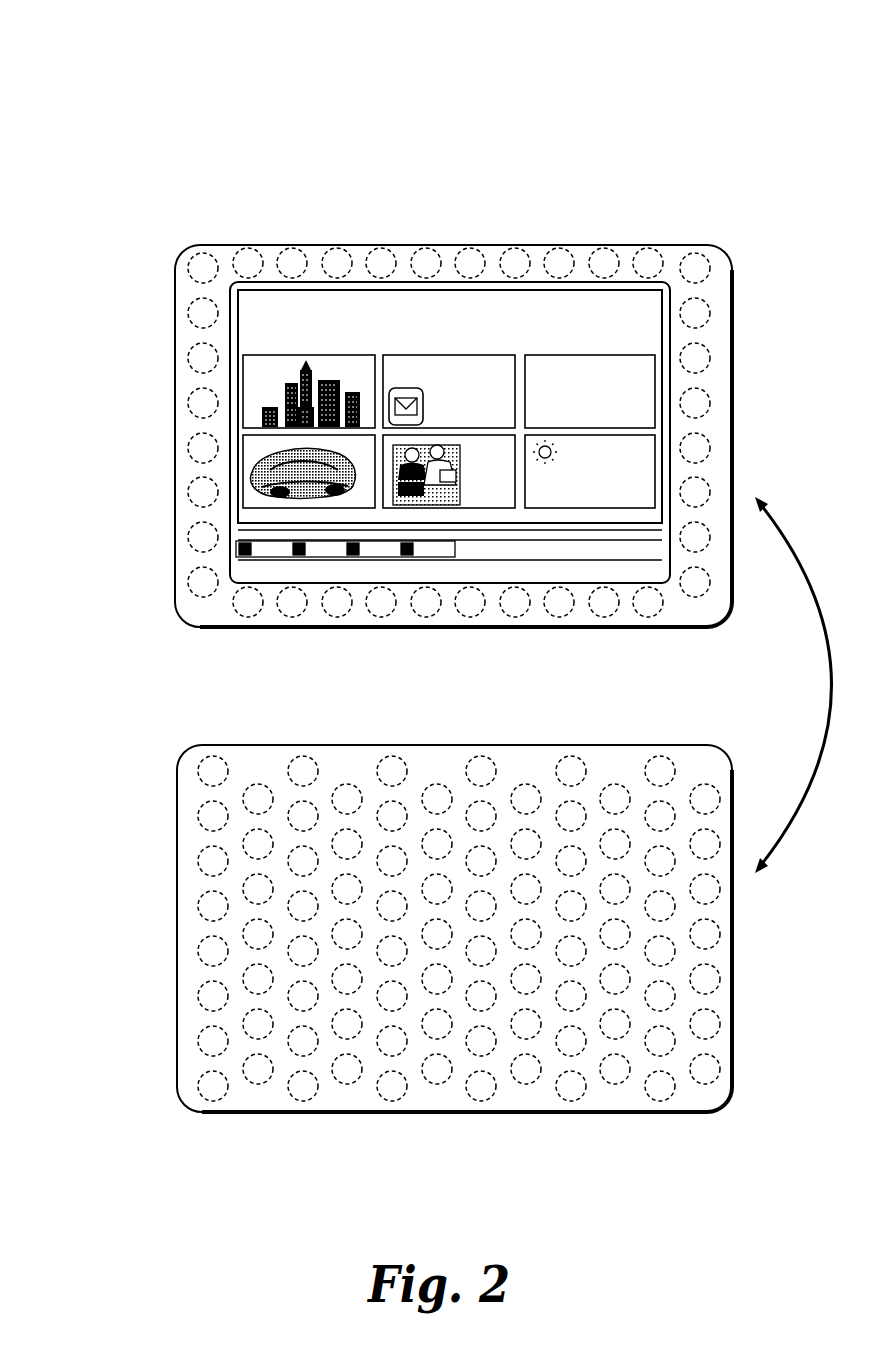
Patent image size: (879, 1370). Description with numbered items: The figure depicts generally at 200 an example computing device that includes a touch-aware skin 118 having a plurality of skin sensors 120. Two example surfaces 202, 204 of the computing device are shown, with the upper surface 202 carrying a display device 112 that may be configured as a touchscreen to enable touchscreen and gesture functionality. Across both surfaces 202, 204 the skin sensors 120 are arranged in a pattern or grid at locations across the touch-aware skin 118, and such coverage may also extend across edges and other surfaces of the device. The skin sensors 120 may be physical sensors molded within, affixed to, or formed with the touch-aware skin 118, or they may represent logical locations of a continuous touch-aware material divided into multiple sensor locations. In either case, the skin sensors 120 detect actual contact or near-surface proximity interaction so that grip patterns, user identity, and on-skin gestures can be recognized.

The example computing device depiction 200 is at (143, 92).
The touch-aware skin 118 is at (218, 745).
The skin sensors 120 is at (213, 905).
The surface 202 is at (446, 254).
The surface 204 is at (448, 757).
The display device 112 is at (450, 432).